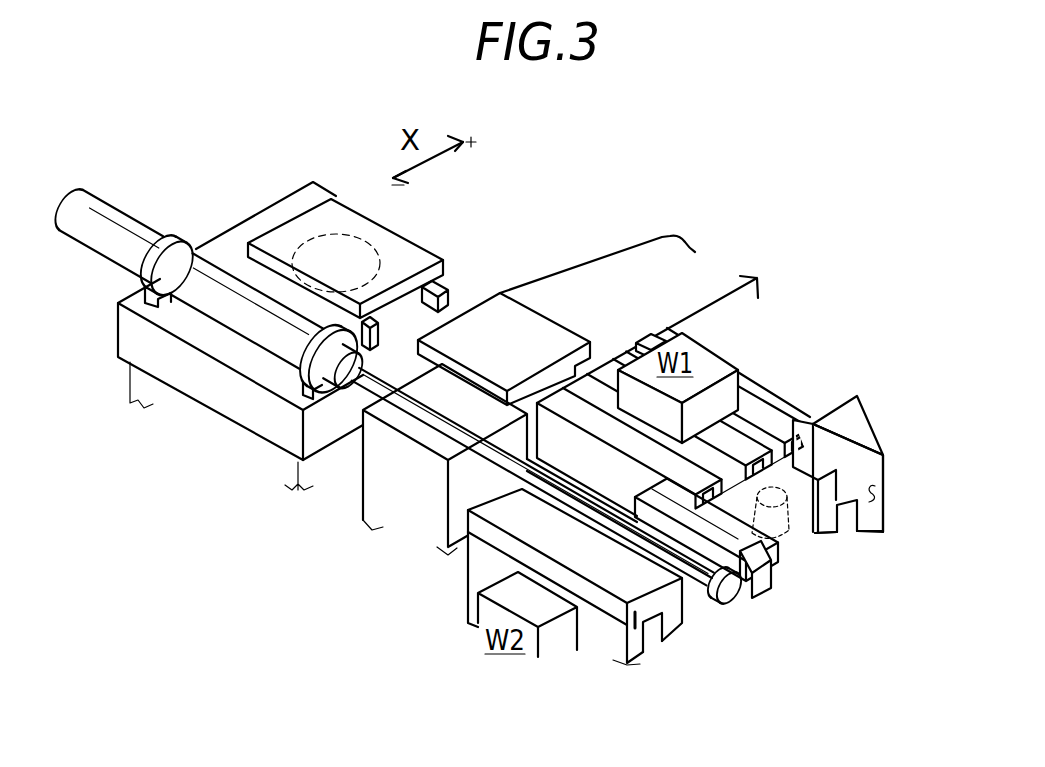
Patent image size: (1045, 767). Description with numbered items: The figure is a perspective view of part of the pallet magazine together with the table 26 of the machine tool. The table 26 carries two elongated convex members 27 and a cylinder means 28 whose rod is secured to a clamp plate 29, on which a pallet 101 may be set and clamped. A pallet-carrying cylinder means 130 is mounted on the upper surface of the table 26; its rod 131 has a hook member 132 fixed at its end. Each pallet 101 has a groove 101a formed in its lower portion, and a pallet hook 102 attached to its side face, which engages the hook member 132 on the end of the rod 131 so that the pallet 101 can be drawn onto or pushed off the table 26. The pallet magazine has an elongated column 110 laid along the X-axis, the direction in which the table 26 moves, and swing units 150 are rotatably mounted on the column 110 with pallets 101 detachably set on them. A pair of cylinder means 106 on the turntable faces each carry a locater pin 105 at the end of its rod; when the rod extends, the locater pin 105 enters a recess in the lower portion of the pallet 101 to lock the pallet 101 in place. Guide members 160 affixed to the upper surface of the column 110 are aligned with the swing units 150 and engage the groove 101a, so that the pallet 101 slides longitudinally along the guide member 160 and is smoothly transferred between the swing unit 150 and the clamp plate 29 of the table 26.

The table 26 is at (290, 211).
The elongated convex member 27 is at (446, 291).
The cylinder means 28 is at (373, 326).
The clamp plate 29 is at (400, 240).
The pallet 101 is at (752, 420).
The groove 101a is at (810, 470).
The pallet hook 102 is at (772, 570).
The locater pin 105 is at (822, 535).
The cylinder means 106 is at (785, 537).
The column 110 is at (634, 268).
The pallet-carrying cylinder means 130 is at (130, 229).
The rod 131 is at (432, 422).
The hook member 132 is at (714, 603).
The swing unit 150 is at (845, 360).
The guide member 160 is at (520, 320).